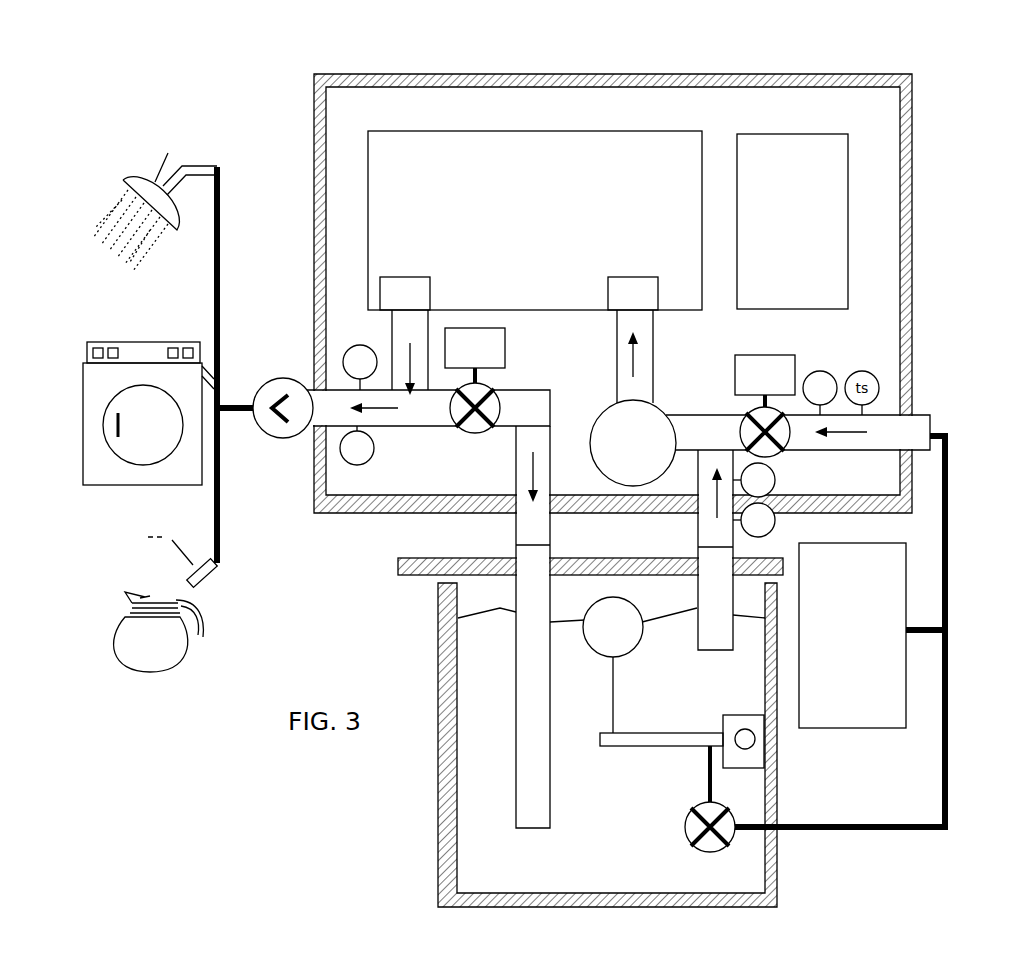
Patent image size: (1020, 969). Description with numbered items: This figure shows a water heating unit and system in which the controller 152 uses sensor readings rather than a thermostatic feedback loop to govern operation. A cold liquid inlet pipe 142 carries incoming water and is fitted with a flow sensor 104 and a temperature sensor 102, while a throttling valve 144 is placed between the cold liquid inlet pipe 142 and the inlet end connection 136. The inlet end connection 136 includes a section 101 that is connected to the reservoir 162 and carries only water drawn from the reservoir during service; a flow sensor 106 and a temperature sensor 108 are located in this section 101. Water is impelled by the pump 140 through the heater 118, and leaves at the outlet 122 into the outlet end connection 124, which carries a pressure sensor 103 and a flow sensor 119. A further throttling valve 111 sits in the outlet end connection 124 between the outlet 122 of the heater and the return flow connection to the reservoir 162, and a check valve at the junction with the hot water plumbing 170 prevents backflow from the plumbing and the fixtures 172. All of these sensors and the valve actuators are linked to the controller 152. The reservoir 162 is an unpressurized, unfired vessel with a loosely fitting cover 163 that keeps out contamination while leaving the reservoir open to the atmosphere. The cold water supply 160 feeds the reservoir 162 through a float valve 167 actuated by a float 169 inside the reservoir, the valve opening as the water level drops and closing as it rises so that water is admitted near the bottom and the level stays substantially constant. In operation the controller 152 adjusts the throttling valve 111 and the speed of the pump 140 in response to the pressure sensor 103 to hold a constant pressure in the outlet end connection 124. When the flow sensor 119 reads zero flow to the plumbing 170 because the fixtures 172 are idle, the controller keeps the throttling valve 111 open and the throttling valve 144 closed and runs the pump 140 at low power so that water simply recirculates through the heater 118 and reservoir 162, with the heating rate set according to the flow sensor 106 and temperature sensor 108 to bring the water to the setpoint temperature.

The section 101 is at (703, 537).
The temperature sensor 102 is at (890, 395).
The pressure sensor 103 is at (344, 356).
The flow sensor 104 is at (820, 371).
The flow sensor 106 is at (775, 483).
The temperature sensor 108 is at (775, 530).
The throttling valve 111 is at (482, 393).
The heater 118 is at (497, 147).
The flow sensor 119 is at (340, 450).
The outlet 122 is at (397, 282).
The outlet end connection 124 is at (405, 437).
The inlet end connection 136 is at (694, 398).
The pump 140 is at (634, 475).
The cold liquid inlet pipe 142 is at (912, 366).
The throttling valve 144 is at (770, 410).
The controller 152 is at (807, 277).
The cold water supply 160 is at (861, 716).
The reservoir 162 is at (500, 715).
The cover 163 is at (398, 575).
The float valve 167 is at (692, 832).
The float 169 is at (610, 647).
The hot water plumbing 170 is at (205, 496).
The fixtures 172 is at (172, 255).